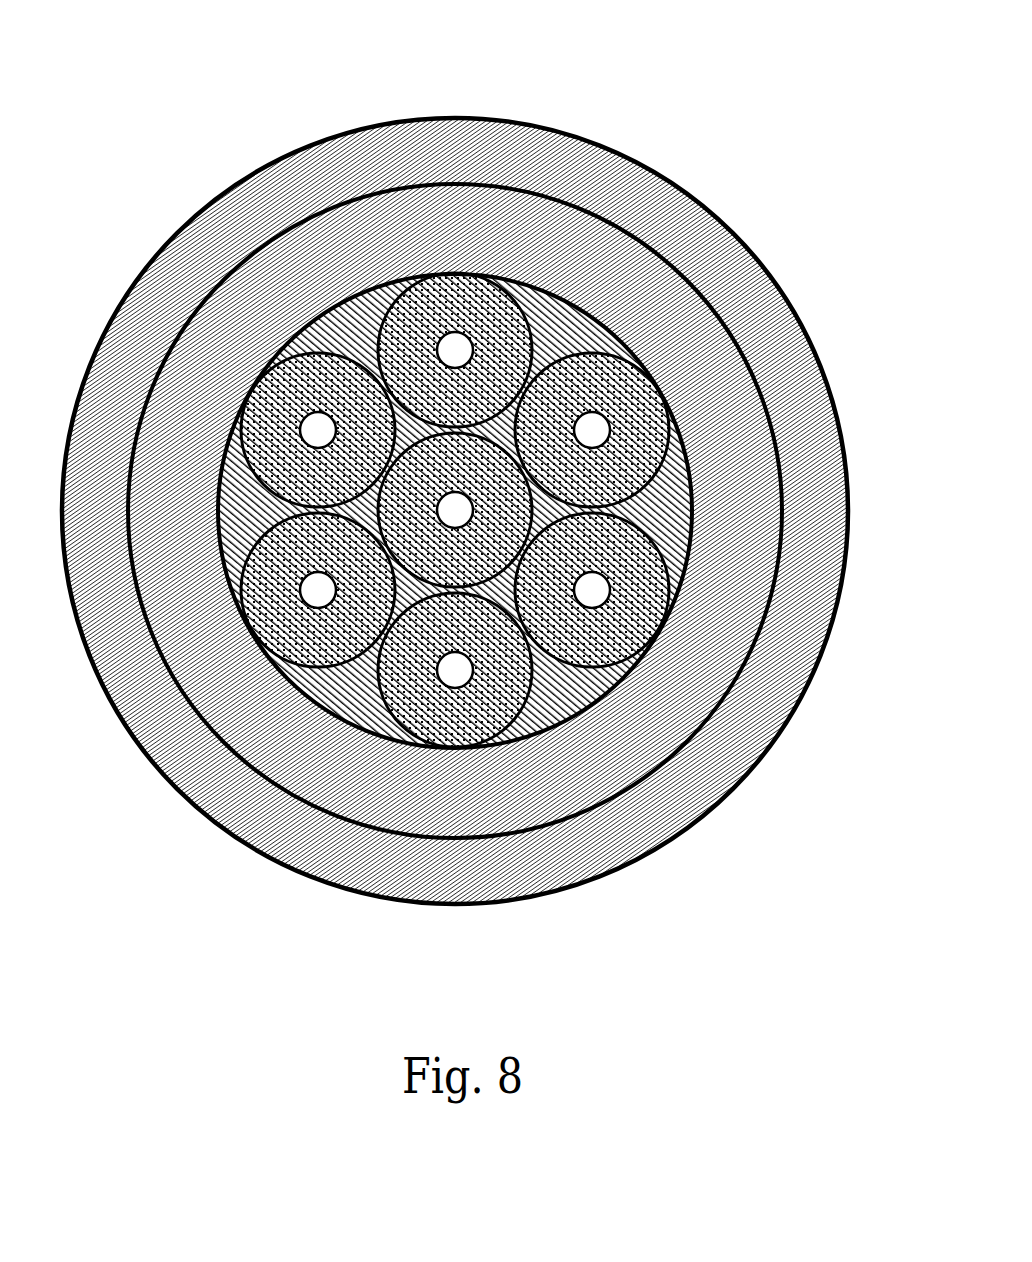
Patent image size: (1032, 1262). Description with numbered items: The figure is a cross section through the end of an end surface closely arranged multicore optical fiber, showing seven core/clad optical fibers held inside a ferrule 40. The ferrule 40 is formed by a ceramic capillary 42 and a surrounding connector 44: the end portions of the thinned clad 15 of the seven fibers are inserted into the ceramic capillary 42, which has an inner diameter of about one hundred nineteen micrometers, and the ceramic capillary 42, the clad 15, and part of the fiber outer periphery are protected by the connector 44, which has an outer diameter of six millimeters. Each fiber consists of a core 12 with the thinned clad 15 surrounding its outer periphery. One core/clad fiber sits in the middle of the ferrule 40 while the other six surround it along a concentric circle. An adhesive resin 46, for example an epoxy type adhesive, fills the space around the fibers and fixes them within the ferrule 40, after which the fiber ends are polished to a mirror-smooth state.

The ferrule 40 is at (543, 104).
The connector 44 is at (693, 247).
The ceramic capillary 42 is at (730, 390).
The adhesive resin 46 is at (362, 728).
The clad 15 is at (533, 745).
The core 12 is at (457, 715).